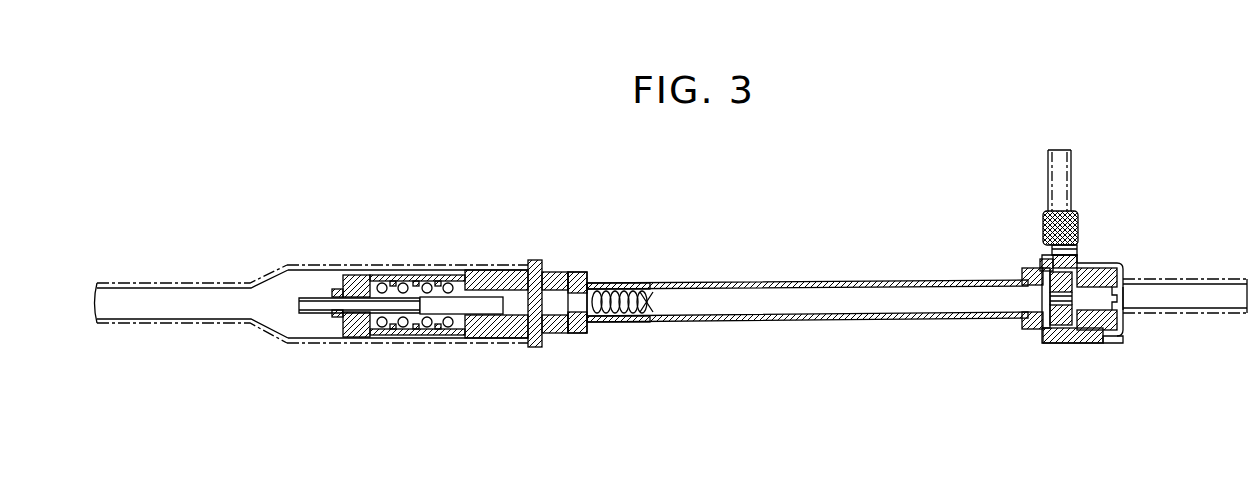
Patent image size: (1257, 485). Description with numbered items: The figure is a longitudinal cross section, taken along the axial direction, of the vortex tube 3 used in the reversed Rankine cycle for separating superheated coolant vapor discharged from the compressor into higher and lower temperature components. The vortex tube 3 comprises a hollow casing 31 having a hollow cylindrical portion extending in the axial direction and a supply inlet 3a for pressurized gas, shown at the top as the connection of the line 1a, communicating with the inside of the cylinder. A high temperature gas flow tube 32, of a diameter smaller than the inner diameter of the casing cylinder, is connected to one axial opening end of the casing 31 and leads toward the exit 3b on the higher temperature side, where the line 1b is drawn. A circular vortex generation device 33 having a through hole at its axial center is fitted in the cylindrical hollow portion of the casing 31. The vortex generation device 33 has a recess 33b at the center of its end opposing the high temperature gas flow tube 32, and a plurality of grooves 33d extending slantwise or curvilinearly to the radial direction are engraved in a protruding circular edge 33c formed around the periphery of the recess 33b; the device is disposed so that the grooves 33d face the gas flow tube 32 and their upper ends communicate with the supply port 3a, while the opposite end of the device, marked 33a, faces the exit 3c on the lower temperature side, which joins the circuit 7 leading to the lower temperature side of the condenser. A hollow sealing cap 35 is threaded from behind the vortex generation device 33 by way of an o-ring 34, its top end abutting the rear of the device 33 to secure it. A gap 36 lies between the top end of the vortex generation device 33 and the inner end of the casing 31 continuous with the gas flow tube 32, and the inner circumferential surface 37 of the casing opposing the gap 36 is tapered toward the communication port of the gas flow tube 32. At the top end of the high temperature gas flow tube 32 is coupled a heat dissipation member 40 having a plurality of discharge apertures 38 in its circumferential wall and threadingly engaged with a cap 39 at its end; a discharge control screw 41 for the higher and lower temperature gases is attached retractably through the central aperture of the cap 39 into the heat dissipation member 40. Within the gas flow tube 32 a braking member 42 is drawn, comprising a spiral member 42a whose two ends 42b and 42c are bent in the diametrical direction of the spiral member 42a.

The first cable 1a is at (1071, 157).
The second cable 1b is at (118, 325).
The vortex tube 3 is at (838, 240).
The supply inlet 3a is at (1085, 263).
The exit on the higher temperature side 3b is at (318, 283).
The exit on the lower temperature side 3c is at (1125, 303).
The circuit 7 is at (1225, 315).
The hollow casing 31 is at (1090, 262).
The high temperature gas flow tube 32 is at (823, 318).
The vortex generation device 33 is at (1062, 340).
The end wall of holder 33a is at (1127, 300).
The recess 33b is at (1030, 328).
The protruding circular edge 33c is at (1050, 335).
The grooves 33d is at (1028, 280).
The o-ring 34 is at (1100, 338).
The hollow sealing cap 35 is at (1123, 323).
The gap 36 is at (1030, 312).
The inner circumferential surface 37 is at (1053, 261).
The discharge apertures 38 is at (428, 332).
The cap 39 is at (347, 337).
The heat dissipation member 40 is at (468, 338).
The discharge control screw 41 is at (312, 313).
The braking member 42 is at (622, 285).
The spiral member 42a is at (605, 322).
The end of the spiral member 42b is at (665, 322).
The end of the spiral member 42c is at (570, 333).